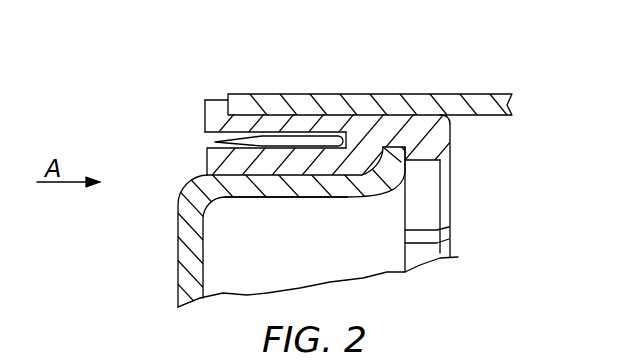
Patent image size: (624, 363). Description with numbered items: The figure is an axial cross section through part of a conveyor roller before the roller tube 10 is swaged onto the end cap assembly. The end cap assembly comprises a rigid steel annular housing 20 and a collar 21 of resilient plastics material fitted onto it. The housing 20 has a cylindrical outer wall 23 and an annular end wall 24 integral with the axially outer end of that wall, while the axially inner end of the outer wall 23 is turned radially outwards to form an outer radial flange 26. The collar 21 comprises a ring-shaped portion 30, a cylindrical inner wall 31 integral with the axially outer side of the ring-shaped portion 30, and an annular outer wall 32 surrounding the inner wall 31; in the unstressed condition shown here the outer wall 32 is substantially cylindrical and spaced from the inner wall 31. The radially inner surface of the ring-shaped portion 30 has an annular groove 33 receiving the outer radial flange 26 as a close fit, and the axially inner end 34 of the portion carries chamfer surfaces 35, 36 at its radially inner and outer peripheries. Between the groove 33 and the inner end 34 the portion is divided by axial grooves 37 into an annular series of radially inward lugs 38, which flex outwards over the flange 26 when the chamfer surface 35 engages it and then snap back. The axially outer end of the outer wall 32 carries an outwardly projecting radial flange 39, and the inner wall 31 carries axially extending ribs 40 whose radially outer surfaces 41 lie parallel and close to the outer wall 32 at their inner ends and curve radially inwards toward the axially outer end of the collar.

The roller tube 10 is at (465, 94).
The annular housing 20 is at (178, 250).
The collar 21 is at (205, 110).
The cylindrical outer wall 23 is at (297, 200).
The annular end wall 24 is at (203, 258).
The outer radial flange 26 is at (393, 163).
The ring-shaped portion 30 is at (357, 152).
The cylindrical inner wall 31 is at (256, 168).
The annular outer wall 32 is at (263, 117).
The annular groove 33 is at (407, 146).
The axially inner end 34 is at (452, 140).
The chamfer surface 35 is at (448, 178).
The chamfer surface 36 is at (452, 124).
The axial grooves 37 is at (443, 234).
The lugs 38 is at (425, 206).
The radial flange 39 is at (213, 99).
The ribs 40 is at (293, 138).
The radially outer surfaces 41 is at (215, 141).